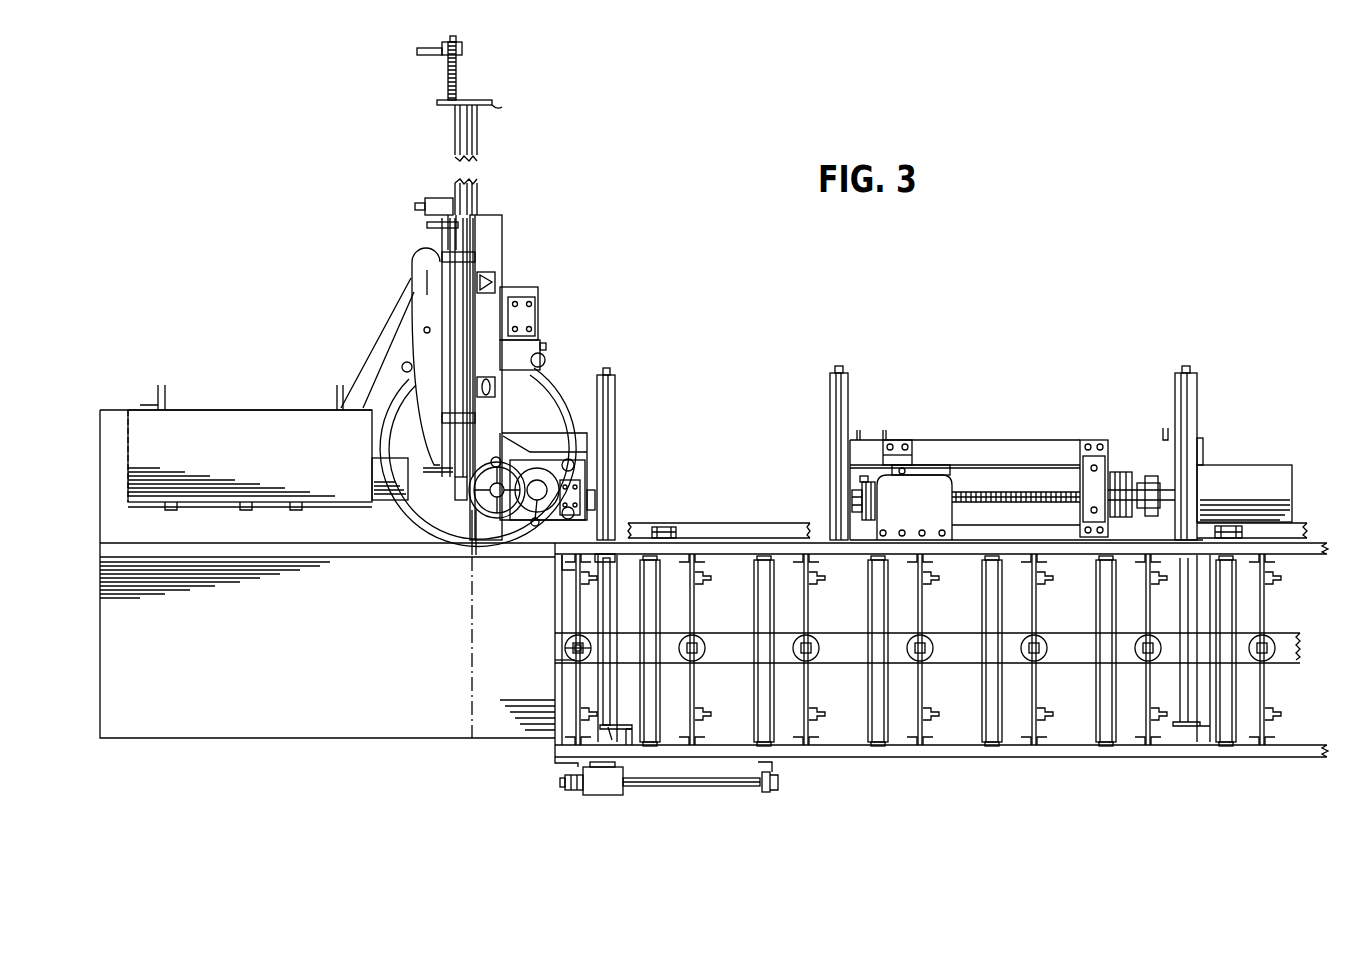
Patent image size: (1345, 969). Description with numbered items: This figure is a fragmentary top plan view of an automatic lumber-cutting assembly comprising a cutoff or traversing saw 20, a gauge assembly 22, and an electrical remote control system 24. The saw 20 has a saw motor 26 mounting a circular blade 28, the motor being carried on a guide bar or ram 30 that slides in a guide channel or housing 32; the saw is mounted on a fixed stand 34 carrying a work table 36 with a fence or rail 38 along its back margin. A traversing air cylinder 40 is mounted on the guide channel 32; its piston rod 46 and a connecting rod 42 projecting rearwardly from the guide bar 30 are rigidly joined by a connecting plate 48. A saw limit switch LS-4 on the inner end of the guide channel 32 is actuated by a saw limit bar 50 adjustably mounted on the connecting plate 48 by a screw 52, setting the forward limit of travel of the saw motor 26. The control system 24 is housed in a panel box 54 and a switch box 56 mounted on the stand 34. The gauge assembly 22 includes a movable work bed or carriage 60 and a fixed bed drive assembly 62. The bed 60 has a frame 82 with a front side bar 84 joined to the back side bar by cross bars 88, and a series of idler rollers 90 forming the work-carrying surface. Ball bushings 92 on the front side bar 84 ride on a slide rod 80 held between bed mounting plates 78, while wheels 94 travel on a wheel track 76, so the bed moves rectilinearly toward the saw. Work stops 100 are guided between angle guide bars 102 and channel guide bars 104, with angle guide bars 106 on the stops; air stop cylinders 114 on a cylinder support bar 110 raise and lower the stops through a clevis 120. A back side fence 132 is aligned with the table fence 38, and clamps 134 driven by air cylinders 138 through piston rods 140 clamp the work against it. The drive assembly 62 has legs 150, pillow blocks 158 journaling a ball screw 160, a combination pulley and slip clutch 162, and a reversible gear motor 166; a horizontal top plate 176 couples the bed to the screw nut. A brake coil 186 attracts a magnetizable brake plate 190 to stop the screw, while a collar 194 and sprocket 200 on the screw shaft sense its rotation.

The cutoff or traversing saw 20 is at (563, 303).
The gauge assembly 22 is at (866, 770).
The electrical remote control system 24 is at (218, 370).
The saw motor 26 is at (588, 465).
The circular blade 28 is at (472, 533).
The guide bar or ram 30 is at (477, 188).
The guide channel or housing 32 is at (442, 242).
The fixed stand 34 is at (89, 526).
The work table 36 is at (110, 618).
The fence or rail 38 is at (110, 550).
The traversing air cylinder 40 is at (455, 240).
The connecting rod 42 is at (472, 132).
The piston rod 46 is at (455, 133).
The connecting plate 48 is at (479, 103).
The saw limit bar 50 is at (437, 47).
The screw 52 is at (457, 72).
The panel box 54 is at (128, 456).
The switch box 56 is at (385, 482).
The work bed or carriage 60 is at (938, 757).
The fixed bed drive assembly 62 is at (1019, 430).
The wheel track 76 is at (752, 533).
The bed mounting plates 78 is at (580, 792).
The slide rod 80 is at (732, 785).
The frame 82 is at (807, 770).
The front side bar 84 is at (1102, 753).
The cross bars 88 is at (623, 560).
The idler rollers 90 is at (764, 700).
The ball bushings or bearings 92 is at (605, 790).
The wheels 94 is at (672, 528).
The work stops or stop plates 100 is at (687, 637).
The angle guide bars 102 is at (572, 562).
The channel guide bars 104 is at (587, 723).
The angle guide bars 106 is at (585, 590).
The cylinder support bar 110 is at (565, 660).
The air stop cylinders 114 is at (572, 645).
The clevis 120 is at (575, 645).
The back side fence or rail 132 is at (720, 548).
The clamps 134 is at (606, 727).
The air cylinder 138 is at (612, 414).
The piston rod 140 is at (606, 600).
The supports or legs 150 is at (860, 437).
The pillow block 158 is at (1082, 495).
The screw 160 is at (1002, 498).
The combination pulley and slip clutch 162 is at (1152, 479).
The reversible gear motor 166 is at (1240, 473).
The horizontal top plate 176 is at (938, 496).
The coil 186 is at (1122, 474).
The magnetizable brake plate 190 is at (1132, 482).
The collar 194 is at (868, 478).
The sprocket 200 is at (852, 498).
The saw limit switch LS-4 is at (438, 198).